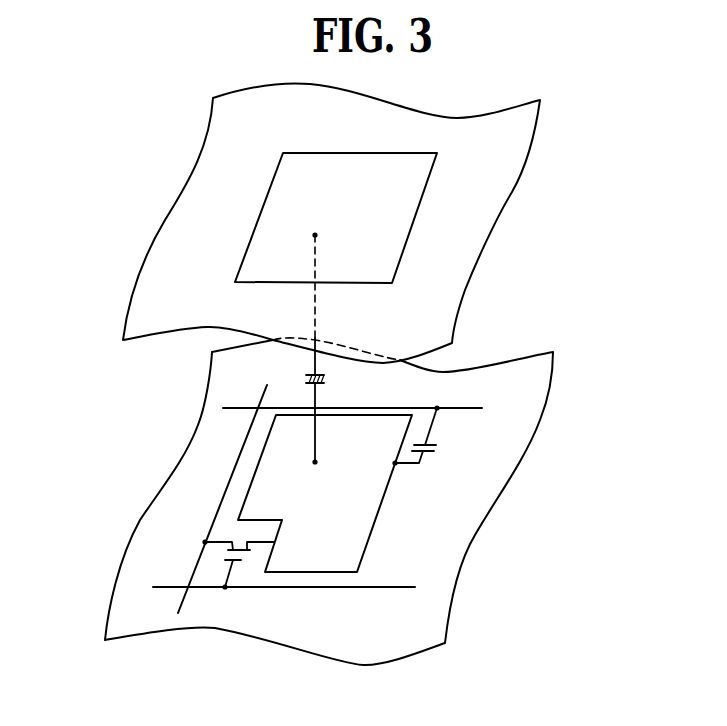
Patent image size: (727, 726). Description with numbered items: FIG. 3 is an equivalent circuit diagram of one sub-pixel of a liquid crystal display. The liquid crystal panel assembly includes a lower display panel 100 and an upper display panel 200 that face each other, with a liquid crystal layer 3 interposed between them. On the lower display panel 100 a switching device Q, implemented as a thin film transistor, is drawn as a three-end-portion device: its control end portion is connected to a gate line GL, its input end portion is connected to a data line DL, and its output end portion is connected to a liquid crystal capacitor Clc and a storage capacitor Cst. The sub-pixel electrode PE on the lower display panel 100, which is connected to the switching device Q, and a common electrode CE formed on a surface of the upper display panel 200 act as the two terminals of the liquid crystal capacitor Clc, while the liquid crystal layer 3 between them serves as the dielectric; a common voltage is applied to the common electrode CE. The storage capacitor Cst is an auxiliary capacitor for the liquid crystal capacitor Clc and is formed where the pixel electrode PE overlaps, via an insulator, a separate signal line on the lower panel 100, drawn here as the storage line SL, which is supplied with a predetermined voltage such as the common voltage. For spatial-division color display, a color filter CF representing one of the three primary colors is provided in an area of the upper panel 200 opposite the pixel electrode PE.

The liquid crystal layer 3 is at (162, 378).
The upper display panel 200 is at (498, 257).
The lower display panel 100 is at (563, 452).
The color filter CF is at (433, 173).
The common electrode CE is at (462, 300).
The data line DL is at (231, 482).
The storage line SL is at (367, 412).
The gate line GL is at (301, 589).
The sub-pixel electrode PE is at (381, 503).
The switching device Q is at (238, 564).
The liquid crystal capacitor Clc is at (334, 348).
The storage capacitor Cst is at (429, 435).